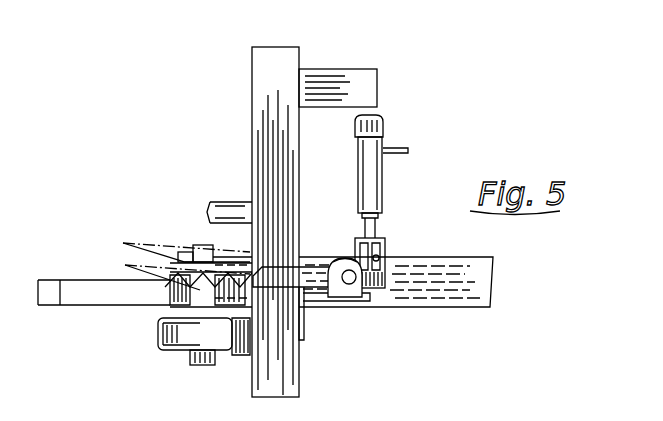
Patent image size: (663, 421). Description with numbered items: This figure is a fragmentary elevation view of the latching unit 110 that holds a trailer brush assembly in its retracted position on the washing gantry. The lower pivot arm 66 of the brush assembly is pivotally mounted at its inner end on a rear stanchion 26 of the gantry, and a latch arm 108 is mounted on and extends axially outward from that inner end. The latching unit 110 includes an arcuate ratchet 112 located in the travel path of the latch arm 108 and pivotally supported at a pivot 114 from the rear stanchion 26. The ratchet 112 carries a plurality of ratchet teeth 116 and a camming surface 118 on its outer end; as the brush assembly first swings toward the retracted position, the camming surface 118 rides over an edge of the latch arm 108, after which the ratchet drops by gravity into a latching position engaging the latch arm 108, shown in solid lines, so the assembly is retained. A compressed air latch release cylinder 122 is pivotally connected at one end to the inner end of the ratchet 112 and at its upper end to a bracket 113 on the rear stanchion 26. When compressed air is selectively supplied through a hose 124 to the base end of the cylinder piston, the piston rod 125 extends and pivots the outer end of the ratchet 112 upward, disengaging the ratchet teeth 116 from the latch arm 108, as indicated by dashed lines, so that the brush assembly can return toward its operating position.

The rear stanchion 26 is at (262, 122).
The lower pivot arm 66 is at (442, 270).
The latch arm 108 is at (76, 290).
The latching unit 110 is at (395, 241).
The arcuate ratchet 112 is at (305, 305).
The bracket 113 is at (342, 75).
The pivot 114 is at (352, 297).
The ratchet teeth 116 is at (213, 300).
The camming surface 118 is at (150, 278).
The compressed air latch release cylinder 122 is at (372, 181).
The hose 124 is at (395, 149).
The piston rod 125 is at (366, 221).